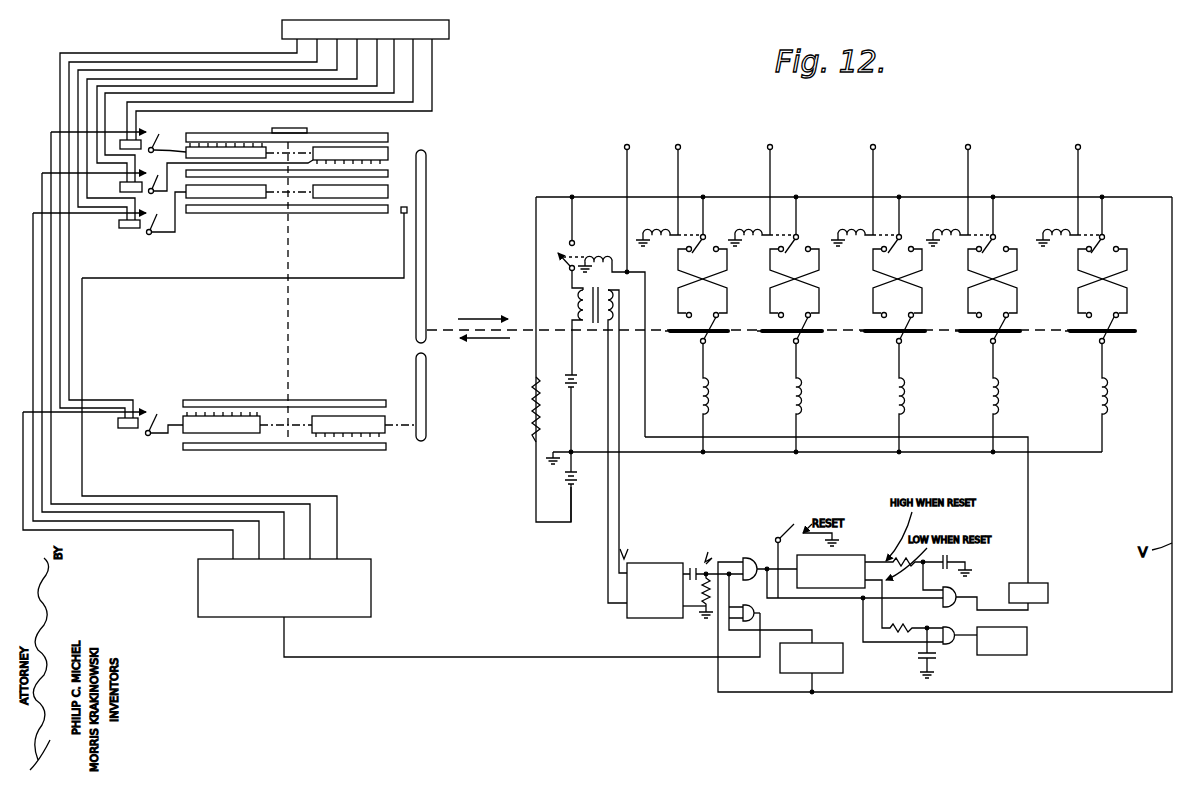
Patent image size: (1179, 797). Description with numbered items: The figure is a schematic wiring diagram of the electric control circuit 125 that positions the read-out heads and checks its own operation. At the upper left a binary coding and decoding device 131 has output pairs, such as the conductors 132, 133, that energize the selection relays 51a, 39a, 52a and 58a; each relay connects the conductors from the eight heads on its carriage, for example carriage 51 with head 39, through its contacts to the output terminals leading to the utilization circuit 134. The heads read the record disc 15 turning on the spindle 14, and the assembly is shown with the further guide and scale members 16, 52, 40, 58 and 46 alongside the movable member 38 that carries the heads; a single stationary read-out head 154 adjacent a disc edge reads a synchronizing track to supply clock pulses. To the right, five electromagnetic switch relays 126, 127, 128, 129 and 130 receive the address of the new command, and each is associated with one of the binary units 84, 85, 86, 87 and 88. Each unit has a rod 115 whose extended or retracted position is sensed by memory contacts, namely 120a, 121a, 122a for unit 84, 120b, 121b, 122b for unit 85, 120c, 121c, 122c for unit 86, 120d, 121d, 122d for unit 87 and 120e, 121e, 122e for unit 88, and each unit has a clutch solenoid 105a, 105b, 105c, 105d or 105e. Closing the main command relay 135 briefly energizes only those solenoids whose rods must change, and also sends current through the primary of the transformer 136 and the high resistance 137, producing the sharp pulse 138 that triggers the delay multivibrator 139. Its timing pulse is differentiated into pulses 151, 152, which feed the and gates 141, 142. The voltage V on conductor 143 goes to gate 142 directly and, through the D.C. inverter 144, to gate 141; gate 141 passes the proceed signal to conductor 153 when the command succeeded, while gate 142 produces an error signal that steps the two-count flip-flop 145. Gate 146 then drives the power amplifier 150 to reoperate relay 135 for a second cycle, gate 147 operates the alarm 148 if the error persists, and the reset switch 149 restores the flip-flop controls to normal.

The binary coding and decoding device 131 is at (282, 23).
The conductor 133 is at (413, 62).
The conductor 132 is at (432, 86).
The selection relay 51a is at (134, 140).
The selection relay 39a is at (122, 187).
The selection relay 52a is at (129, 229).
The selection relay 58a is at (128, 429).
The record disc 15 is at (236, 120).
The spindle 14 is at (307, 131).
The carriage 51 is at (226, 151).
The head 39 is at (350, 155).
The guide bar 16 is at (388, 174).
The scale member 52 is at (226, 191).
The scale member 40 is at (350, 191).
The stationary read-out head 154 is at (400, 214).
The member 38 is at (427, 234).
The scale member 58 is at (221, 422).
The scale member 46 is at (348, 426).
The utilization circuit 134 is at (372, 584).
The conductor 153 is at (476, 657).
The electric control circuit 125 is at (737, 182).
The conductor 143 is at (1118, 683).
The high resistance 137 is at (512, 409).
The main command relay 135 is at (612, 240).
The transformer 136 is at (579, 304).
The binary unit 88 is at (707, 185).
The binary unit 87 is at (814, 185).
The binary unit 86 is at (922, 185).
The binary unit 85 is at (999, 185).
The binary unit 84 is at (1109, 185).
The electromagnetic switch relay 126 is at (660, 230).
The electromagnetic switch relay 127 is at (752, 230).
The electromagnetic switch relay 128 is at (855, 230).
The electromagnetic switch relay 129 is at (950, 230).
The electromagnetic switch relay 130 is at (1054, 230).
The memory contact 122e is at (686, 300).
The memory contact 121e is at (742, 293).
The memory contact 122d is at (778, 316).
The memory contact 121d is at (835, 293).
The memory contact 122c is at (881, 316).
The memory contact 121c is at (938, 293).
The memory contact 122b is at (976, 316).
The memory contact 121b is at (1033, 293).
The memory contact 122a is at (1086, 316).
The memory contact 121a is at (1120, 310).
The memory contact 120e is at (700, 344).
The memory contact 120d is at (792, 344).
The memory contact 120c is at (895, 344).
The memory contact 120b is at (990, 344).
The memory contact 120a is at (1100, 344).
The clutch solenoid 105e is at (700, 398).
The clutch solenoid 105d is at (792, 398).
The clutch solenoid 105c is at (895, 398).
The clutch solenoid 105b is at (990, 398).
The clutch solenoid 105a is at (1098, 398).
The rod 115 is at (1096, 342).
The delay multivibrator 139 is at (656, 563).
The sharp pulse 138 is at (618, 562).
The differentiated pulse 151 is at (695, 532).
The differentiated pulse 152 is at (724, 554).
The and gate 142 is at (748, 556).
The and gate 141 is at (762, 610).
The D.C. inverter 144 is at (843, 631).
The reset switch 149 is at (779, 536).
The 2-count flip-flop device 145 is at (867, 560).
The and gate 146 is at (958, 590).
The power amplifier 150 is at (1040, 583).
The and gate 147 is at (945, 626).
The alarm 148 is at (1028, 636).